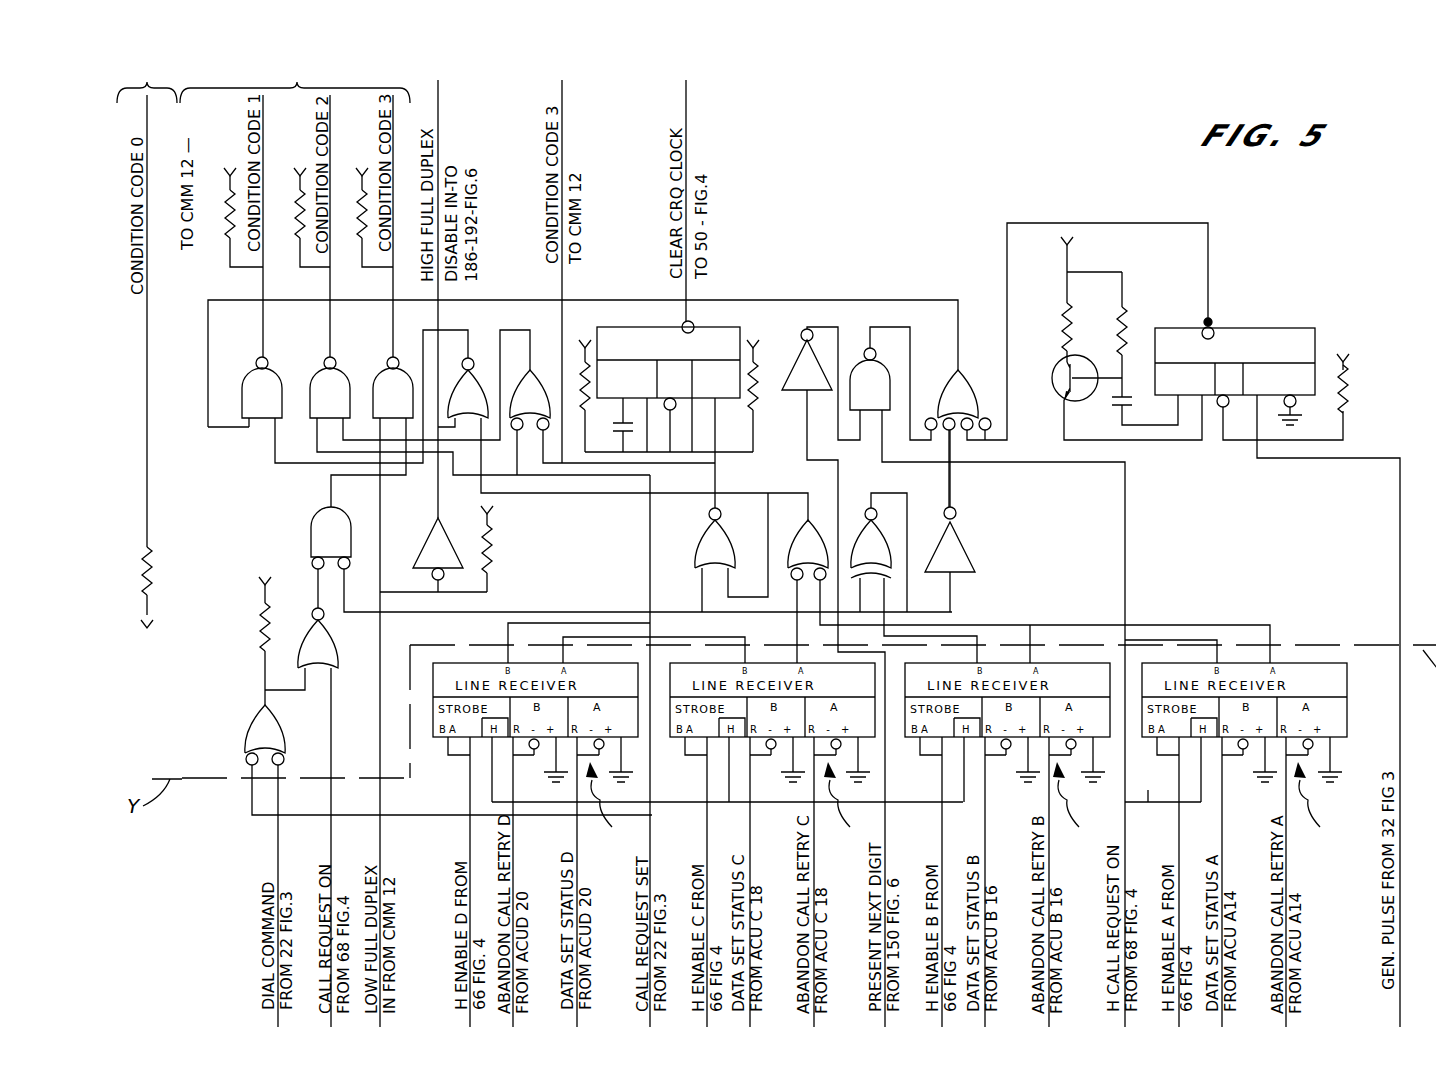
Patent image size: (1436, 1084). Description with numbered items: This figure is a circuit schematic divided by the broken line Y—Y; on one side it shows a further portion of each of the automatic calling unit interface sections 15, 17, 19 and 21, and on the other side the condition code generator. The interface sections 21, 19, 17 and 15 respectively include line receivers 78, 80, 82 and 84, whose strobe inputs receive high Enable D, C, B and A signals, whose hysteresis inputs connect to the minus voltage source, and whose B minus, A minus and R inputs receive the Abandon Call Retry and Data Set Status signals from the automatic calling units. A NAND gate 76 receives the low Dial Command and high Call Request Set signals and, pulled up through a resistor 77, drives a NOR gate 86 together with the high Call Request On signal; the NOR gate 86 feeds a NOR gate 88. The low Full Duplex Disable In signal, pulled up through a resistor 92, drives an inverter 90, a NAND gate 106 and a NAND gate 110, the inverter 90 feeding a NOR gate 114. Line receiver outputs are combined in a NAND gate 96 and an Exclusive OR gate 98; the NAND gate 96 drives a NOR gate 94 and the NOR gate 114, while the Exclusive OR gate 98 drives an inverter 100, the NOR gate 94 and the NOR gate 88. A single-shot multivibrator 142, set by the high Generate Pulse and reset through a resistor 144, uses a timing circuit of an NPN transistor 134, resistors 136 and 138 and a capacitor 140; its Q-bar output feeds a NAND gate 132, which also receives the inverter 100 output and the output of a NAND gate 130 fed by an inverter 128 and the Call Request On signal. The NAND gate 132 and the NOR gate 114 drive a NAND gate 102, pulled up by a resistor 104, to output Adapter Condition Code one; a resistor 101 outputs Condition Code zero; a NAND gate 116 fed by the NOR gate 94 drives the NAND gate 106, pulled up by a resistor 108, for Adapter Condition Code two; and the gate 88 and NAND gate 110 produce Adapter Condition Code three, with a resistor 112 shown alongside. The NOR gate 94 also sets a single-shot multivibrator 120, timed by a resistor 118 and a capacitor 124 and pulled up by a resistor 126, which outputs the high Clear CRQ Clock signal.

The automatic calling unit interface section 15 is at (1319, 804).
The automatic calling unit interface section 17 is at (1076, 806).
The automatic calling unit interface section 19 is at (844, 806).
The automatic calling unit interface section 21 is at (607, 806).
The NAND gate 76 is at (247, 728).
The resistor 77 is at (262, 632).
The line receiver 78 is at (452, 660).
The line receiver 80 is at (693, 660).
The line receiver 82 is at (1072, 662).
The line receiver 84 is at (1317, 662).
The NOR gate 86 is at (313, 610).
The NOR gate 88 is at (312, 518).
The inverter 90 is at (427, 540).
The resistor 92 is at (493, 553).
The NOR gate 94 is at (693, 540).
The NAND gate 96 is at (822, 502).
The Exclusive OR gate 98 is at (887, 520).
The inverter 100 is at (962, 533).
The resistor 101 is at (150, 584).
The NAND gate 102 is at (250, 372).
The resistor 104 is at (226, 208).
The NAND gate 106 is at (318, 372).
The resistor 108 is at (296, 208).
The NAND gate 110 is at (380, 372).
The resistor 112 is at (358, 208).
The NOR gate 114 is at (474, 365).
The NAND gate 116 is at (536, 368).
The resistor 118 is at (587, 403).
The single-shot multivibrator 120 is at (740, 327).
The capacitor 124 is at (618, 440).
The resistor 126 is at (756, 403).
The inverter 128 is at (800, 372).
The NAND gate 130 is at (880, 368).
The NAND gate 132 is at (958, 380).
The NPN transistor 134 is at (1052, 400).
The resistor 136 is at (1062, 324).
The resistor 138 is at (1125, 326).
The capacitor 140 is at (1115, 401).
The single-shot multivibrator 142 is at (1290, 328).
The resistor 144 is at (1350, 386).